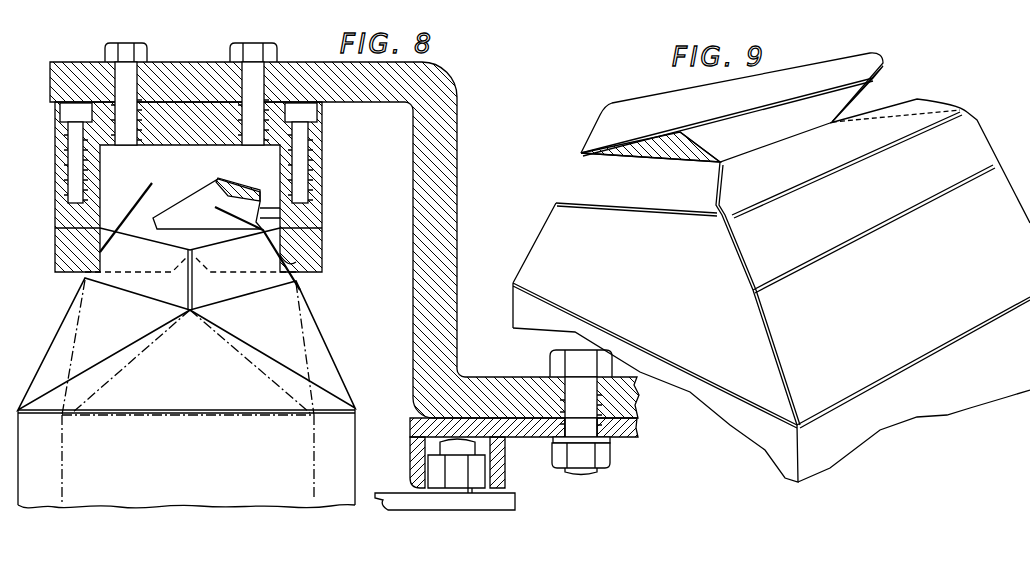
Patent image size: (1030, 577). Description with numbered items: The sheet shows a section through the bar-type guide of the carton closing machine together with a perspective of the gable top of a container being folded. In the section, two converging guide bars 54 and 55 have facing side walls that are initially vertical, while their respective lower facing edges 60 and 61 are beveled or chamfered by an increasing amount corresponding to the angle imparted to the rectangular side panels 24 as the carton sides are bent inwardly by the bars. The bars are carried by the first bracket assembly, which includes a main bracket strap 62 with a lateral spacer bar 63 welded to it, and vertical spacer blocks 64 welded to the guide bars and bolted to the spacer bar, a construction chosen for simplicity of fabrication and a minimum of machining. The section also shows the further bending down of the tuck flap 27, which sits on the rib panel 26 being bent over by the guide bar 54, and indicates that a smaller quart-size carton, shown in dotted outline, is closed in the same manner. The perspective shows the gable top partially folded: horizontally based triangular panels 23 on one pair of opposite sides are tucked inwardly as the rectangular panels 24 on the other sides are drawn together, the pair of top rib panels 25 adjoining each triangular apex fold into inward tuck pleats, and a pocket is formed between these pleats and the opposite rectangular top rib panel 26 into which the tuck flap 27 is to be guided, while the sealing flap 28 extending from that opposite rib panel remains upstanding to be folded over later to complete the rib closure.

In FIG. 9, the triangular panel 23 is at (655, 342).
In FIG. 9, the rectangular panel 24 is at (913, 384).
In FIG. 9, the top rib panel 25 is at (678, 293).
In FIG. 9, the rectangular top rib panel 26 is at (788, 202).
In FIG. 9, the tuck flap 27 is at (912, 161).
In FIG. 9, the sealing flap 28 is at (732, 104).
In FIG. 8, the guide bar 54 is at (312, 270).
In FIG. 8, the guide bar 55 is at (58, 264).
In FIG. 8, the lower facing edge 60 is at (296, 262).
In FIG. 8, the lower facing edge 61 is at (100, 256).
In FIG. 8, the main bracket strap 62 is at (451, 186).
In FIG. 8, the lateral spacer bar 63 is at (178, 143).
In FIG. 8, the vertical spacer block 64 is at (62, 208).